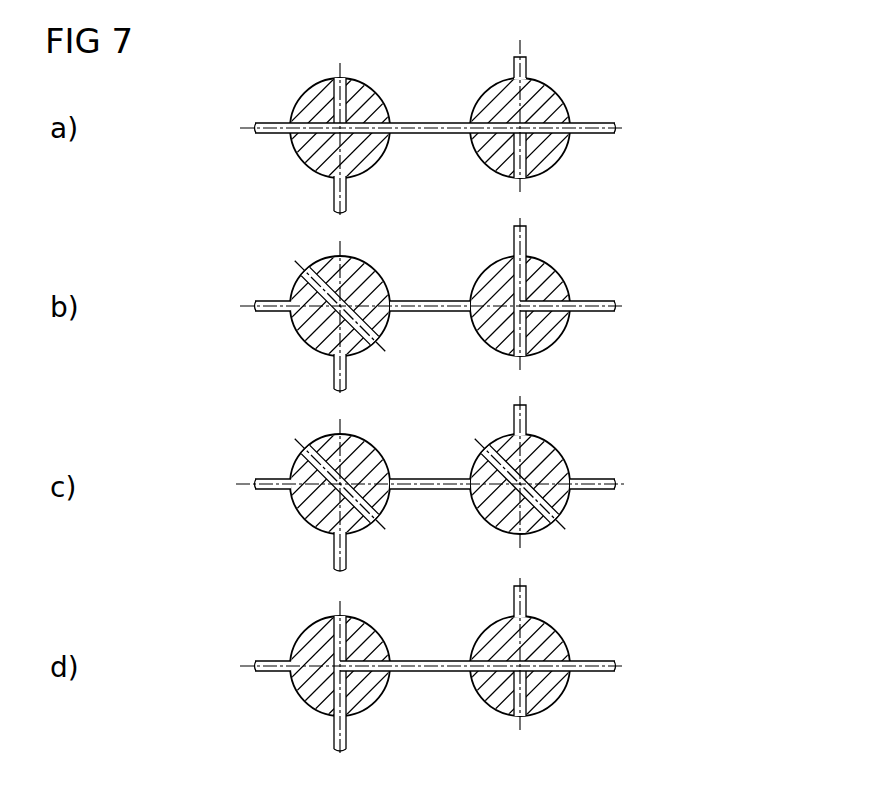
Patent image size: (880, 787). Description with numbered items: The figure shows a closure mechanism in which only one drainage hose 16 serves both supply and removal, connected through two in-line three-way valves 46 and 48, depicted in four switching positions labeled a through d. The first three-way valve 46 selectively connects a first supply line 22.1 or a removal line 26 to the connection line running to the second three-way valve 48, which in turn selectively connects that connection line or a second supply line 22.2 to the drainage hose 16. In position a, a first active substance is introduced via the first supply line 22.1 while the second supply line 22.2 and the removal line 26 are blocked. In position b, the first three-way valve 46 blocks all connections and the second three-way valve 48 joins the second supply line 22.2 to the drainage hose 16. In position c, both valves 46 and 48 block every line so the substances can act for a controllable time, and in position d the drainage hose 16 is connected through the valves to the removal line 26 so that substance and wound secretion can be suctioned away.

The first three-way valve 46 is at (297, 102).
The second three-way valve 48 is at (551, 167).
The first supply line 22.1 is at (256, 134).
The second supply line 22.2 is at (527, 62).
The drainage hose 16 is at (616, 122).
The removal line 26 is at (333, 203).